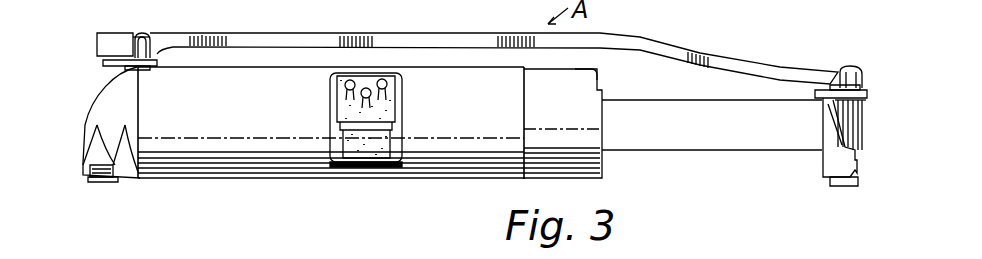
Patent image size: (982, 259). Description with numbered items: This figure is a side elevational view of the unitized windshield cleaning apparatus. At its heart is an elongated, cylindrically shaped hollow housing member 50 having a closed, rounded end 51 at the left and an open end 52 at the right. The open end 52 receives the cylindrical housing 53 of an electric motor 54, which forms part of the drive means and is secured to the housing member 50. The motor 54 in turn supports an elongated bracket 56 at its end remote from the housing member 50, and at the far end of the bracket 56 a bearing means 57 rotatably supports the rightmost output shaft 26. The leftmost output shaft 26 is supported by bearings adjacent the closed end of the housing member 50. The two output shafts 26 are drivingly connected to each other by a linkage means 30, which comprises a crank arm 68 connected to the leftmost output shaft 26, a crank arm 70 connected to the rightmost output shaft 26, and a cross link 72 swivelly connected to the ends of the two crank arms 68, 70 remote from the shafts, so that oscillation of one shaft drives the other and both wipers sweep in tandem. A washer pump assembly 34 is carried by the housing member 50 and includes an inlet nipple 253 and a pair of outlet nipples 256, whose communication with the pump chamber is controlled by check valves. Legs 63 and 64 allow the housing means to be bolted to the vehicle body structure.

The output shaft 26 is at (145, 38).
The linkage means 30 is at (642, 32).
The cross link 72 is at (470, 40).
The crank arm 68 is at (103, 63).
The closed rounded end 51 is at (113, 100).
The leg 63 is at (100, 178).
The housing member 50 is at (190, 140).
The washer pump assembly 34 is at (405, 107).
The outlet nipples 256 is at (384, 82).
The inlet nipple 253 is at (362, 98).
The open end 52 is at (527, 119).
The cylindrical housing 53 is at (590, 78).
The electric motor 54 is at (600, 128).
The bracket 56 is at (700, 130).
The crank arm 70 is at (830, 91).
The bearing means 57 is at (842, 120).
The leg 64 is at (830, 181).